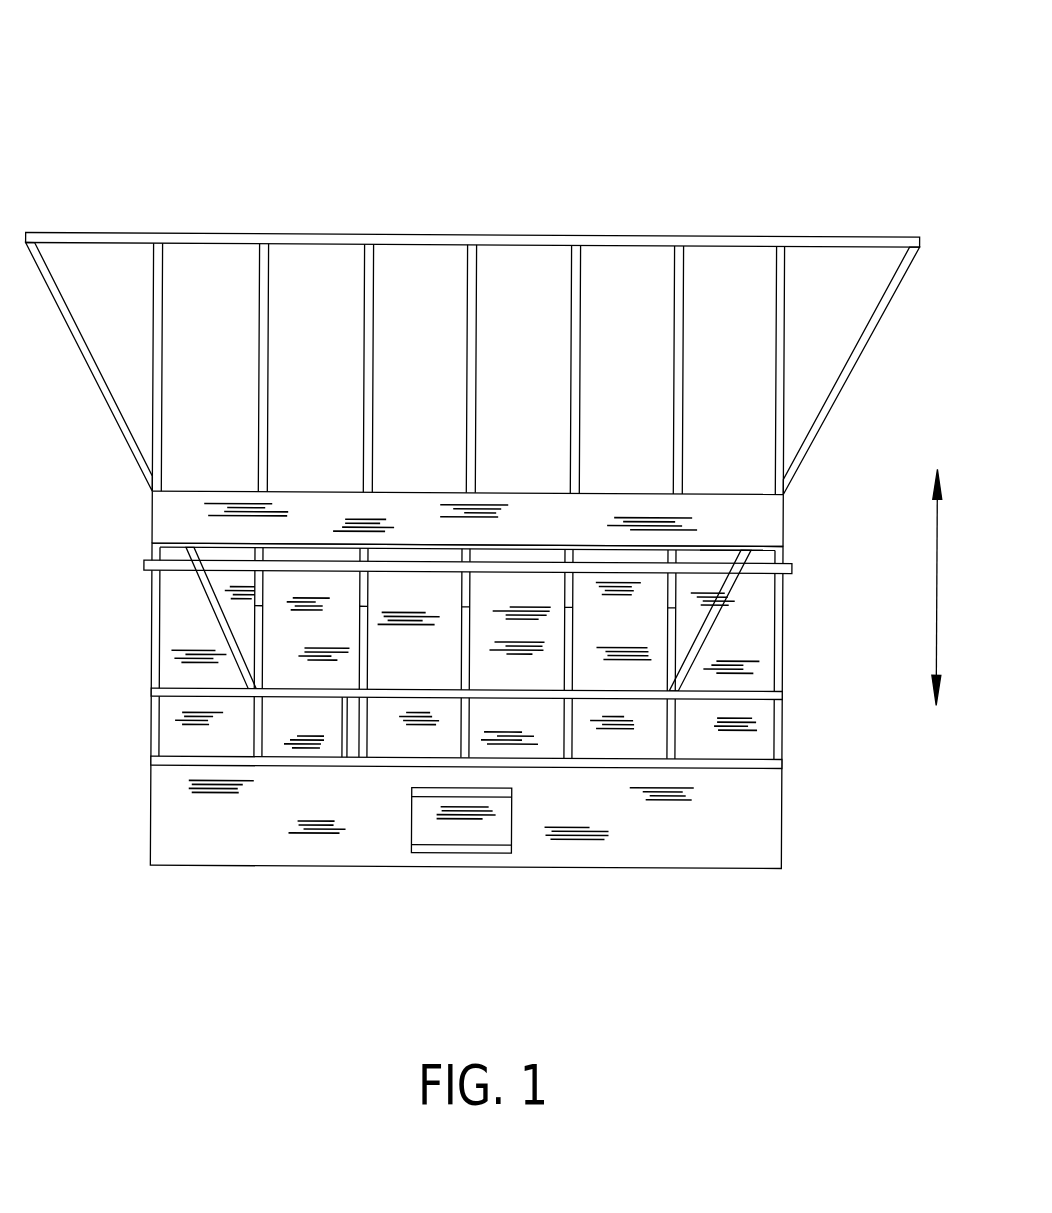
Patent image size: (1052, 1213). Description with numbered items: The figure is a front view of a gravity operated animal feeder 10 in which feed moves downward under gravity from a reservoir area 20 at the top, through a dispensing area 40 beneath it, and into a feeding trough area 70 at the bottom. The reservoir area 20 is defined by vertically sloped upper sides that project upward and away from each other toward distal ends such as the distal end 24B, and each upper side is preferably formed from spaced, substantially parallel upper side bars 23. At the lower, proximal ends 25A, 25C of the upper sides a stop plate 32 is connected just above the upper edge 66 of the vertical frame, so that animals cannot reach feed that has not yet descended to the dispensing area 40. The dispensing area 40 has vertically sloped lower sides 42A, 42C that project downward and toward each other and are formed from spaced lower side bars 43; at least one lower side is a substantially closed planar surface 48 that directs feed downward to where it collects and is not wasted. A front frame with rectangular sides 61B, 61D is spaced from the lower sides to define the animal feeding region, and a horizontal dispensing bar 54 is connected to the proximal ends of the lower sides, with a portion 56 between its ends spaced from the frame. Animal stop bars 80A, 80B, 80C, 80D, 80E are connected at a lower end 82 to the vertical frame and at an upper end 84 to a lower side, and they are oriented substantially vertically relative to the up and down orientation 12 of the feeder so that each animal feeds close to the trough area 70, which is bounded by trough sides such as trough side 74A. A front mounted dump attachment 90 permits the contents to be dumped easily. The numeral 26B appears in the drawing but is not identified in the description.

The animal feeder 10 is at (220, 100).
The up and down orientation 12 is at (937, 545).
The reservoir area 20 is at (198, 388).
The upper side bars 23 is at (162, 288).
The distal end of vertically sloped upper side 24B is at (316, 238).
The proximal end of vertically sloped upper side 25A is at (130, 452).
The proximal end of vertically sloped upper side 25C is at (753, 560).
The cross rail 26B is at (183, 549).
The stop plate 32 is at (603, 505).
The dispensing area 40 is at (180, 625).
The vertically sloped lower side 42A is at (197, 590).
The vertically sloped lower side 42C is at (718, 622).
The lower side bars 43 is at (357, 652).
The substantially closed planar surface 48 is at (387, 592).
The horizontal dispensing bar 54 is at (218, 698).
The portion of dispensing bar 56 is at (344, 760).
The front frame side 61B is at (598, 578).
The front frame side 61D is at (573, 733).
The upper edge of vertical frame 66 is at (637, 565).
The feeding trough area 70 is at (653, 742).
The trough side 74A is at (182, 828).
The animal stop bar 80A is at (253, 643).
The animal stop bar 80B is at (357, 588).
The animal stop bar 80C is at (458, 727).
The animal stop bar 80D is at (663, 772).
The animal stop bar 80E is at (677, 720).
The lower end of animal stop bar 82 is at (563, 752).
The upper end of animal stop bar 84 is at (570, 592).
The dump attachment 90 is at (498, 830).